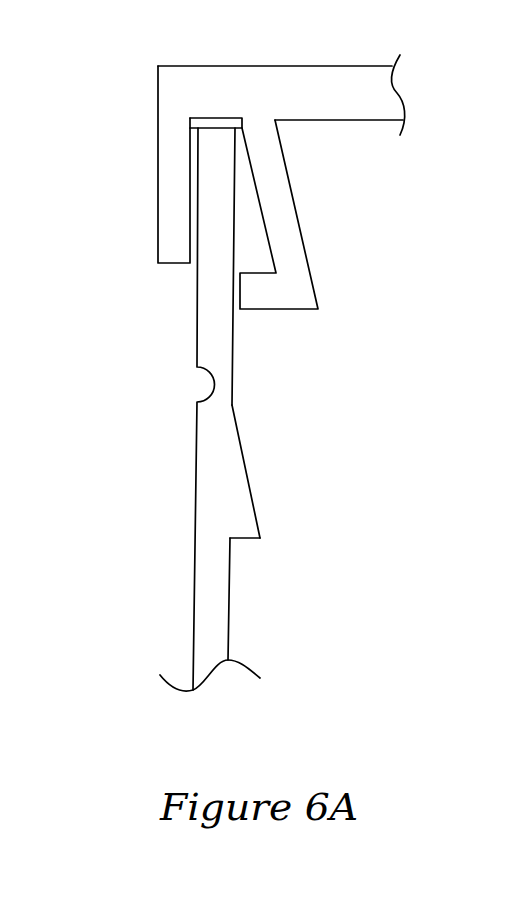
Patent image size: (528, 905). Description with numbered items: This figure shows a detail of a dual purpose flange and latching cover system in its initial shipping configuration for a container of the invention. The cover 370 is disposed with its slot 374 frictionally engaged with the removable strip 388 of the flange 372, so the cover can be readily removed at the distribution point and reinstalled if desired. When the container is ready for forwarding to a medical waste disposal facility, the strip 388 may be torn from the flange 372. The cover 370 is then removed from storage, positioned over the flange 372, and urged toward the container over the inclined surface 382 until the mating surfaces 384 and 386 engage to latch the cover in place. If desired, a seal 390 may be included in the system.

The cover 370 is at (372, 97).
The flange 372 is at (207, 588).
The slot 374 is at (195, 219).
The inclined surface 382 is at (250, 485).
The mating surface 384 is at (256, 275).
The mating surface 386 is at (247, 540).
The removable strip 388 is at (213, 157).
The seal 390 is at (217, 118).